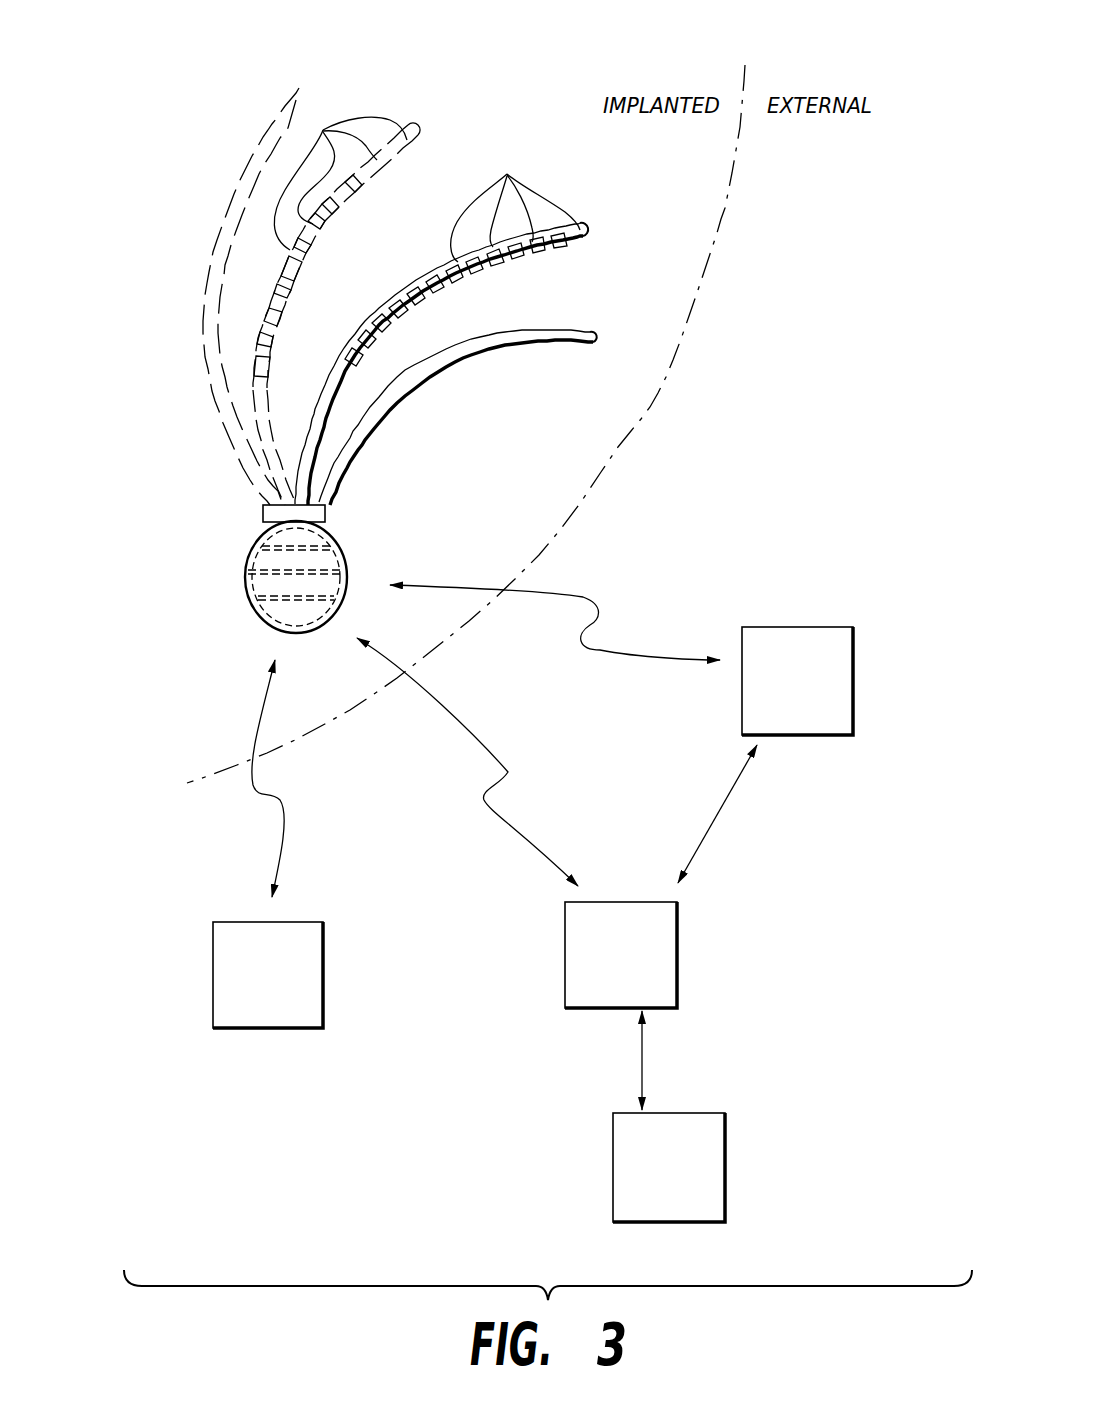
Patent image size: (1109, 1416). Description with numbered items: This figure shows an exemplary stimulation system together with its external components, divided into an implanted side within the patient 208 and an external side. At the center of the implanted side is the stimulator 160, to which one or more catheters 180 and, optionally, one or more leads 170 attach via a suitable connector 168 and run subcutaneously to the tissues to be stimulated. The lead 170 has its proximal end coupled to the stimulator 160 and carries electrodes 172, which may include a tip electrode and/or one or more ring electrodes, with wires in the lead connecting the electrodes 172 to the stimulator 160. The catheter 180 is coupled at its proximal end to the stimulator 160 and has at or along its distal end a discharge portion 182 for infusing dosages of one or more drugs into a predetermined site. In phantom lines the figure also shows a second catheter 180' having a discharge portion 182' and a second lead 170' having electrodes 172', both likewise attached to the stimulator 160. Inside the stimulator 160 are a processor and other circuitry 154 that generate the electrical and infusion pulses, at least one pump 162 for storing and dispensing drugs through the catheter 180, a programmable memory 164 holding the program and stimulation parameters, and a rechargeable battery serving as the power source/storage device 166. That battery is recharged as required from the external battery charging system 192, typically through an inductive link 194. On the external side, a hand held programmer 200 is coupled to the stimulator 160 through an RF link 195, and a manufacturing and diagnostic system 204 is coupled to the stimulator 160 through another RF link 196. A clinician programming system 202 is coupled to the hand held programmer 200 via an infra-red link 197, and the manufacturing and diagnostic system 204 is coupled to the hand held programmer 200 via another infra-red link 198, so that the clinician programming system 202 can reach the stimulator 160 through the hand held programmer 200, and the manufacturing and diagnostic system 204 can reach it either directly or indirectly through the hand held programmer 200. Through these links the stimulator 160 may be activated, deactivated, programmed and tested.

The electrical components / processor and other circuitry 154 is at (257, 558).
The stimulator 160 is at (345, 563).
The pump 162 is at (275, 536).
The programmable memory 164 is at (258, 587).
The power source/storage device 166 is at (275, 615).
The connector 168 is at (263, 519).
The lead 170 is at (441, 364).
The second lead 170' is at (336, 314).
The electrode 172 is at (515, 202).
The electrode (on second lead) 172' is at (340, 179).
The catheter 180 is at (458, 417).
The second catheter 180' is at (183, 296).
The discharge portion 182 is at (635, 313).
The discharge portion (of second catheter) 182' is at (294, 48).
The external battery charging system (EBCS) 192 is at (213, 972).
The inductive link 194 is at (283, 840).
The RF link 195 is at (508, 772).
The RF link 196 is at (588, 596).
The infra-red link 197 is at (640, 1057).
The infra-red link 198 is at (712, 822).
The hand held programmer (HHP) 200 is at (677, 952).
The clinician programming system (CPS) 202 is at (727, 1160).
The manufacturing and diagnostic system (MDS) 204 is at (800, 626).
The patient 208 is at (598, 456).